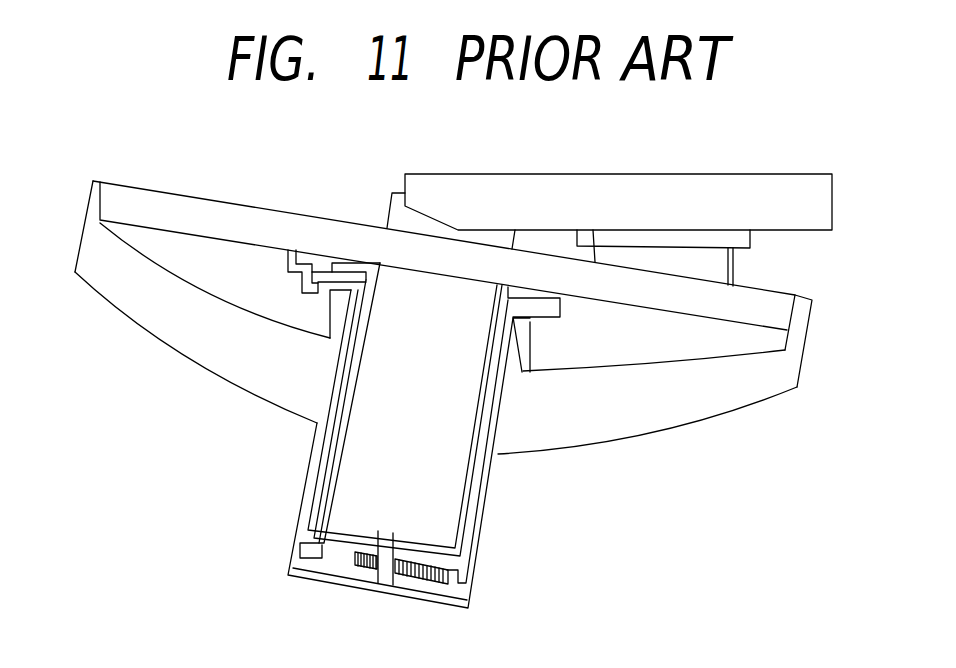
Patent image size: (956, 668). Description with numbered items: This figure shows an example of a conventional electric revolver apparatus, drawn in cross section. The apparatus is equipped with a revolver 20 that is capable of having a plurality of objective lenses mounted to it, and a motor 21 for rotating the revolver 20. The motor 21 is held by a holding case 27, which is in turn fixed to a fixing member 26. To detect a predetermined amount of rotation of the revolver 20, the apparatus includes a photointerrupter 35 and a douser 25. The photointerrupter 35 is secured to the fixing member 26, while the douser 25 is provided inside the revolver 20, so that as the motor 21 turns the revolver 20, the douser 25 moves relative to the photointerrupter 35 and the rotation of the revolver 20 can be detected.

The revolver 20 is at (732, 392).
The motor 21 is at (435, 475).
The douser 25 is at (556, 319).
The fixing member 26 is at (197, 235).
The holding case 27 is at (470, 520).
The photointerrupter 35 is at (316, 268).